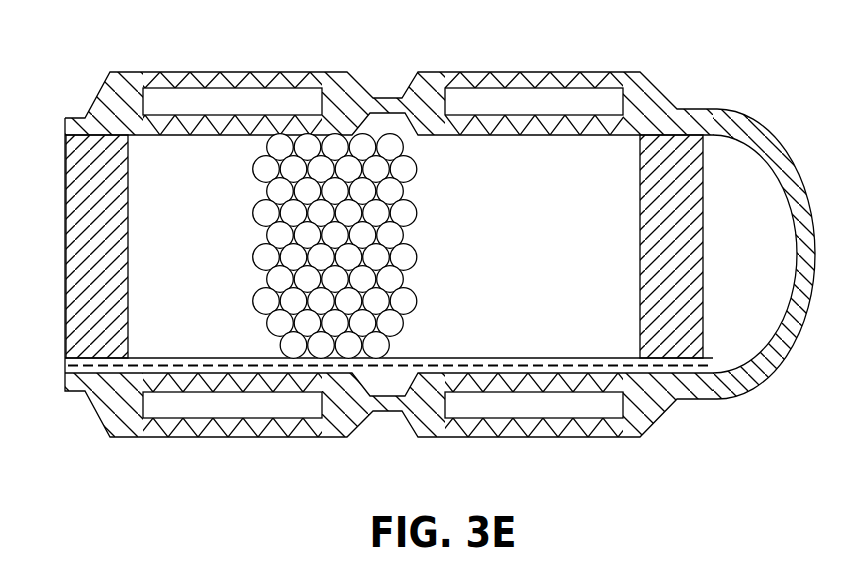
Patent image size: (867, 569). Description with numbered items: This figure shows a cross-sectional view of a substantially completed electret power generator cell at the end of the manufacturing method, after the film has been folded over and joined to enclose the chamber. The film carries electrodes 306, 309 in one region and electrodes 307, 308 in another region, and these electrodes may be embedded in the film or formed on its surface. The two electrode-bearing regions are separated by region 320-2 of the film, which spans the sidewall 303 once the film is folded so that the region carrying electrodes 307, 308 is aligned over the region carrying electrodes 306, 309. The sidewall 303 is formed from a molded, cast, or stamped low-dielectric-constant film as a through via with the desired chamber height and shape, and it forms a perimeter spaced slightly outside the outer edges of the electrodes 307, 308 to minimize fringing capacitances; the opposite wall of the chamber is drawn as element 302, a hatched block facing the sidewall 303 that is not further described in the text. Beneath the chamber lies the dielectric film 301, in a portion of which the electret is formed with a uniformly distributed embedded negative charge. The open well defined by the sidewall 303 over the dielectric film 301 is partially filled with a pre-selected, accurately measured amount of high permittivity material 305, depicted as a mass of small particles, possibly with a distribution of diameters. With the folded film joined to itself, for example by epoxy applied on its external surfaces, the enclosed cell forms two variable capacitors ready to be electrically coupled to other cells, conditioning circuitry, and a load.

The dielectric film 301 is at (518, 357).
The right end wall 302 is at (632, 132).
The sidewall 303 is at (155, 209).
The high permittivity material 305 is at (407, 256).
The electrode 306 is at (228, 408).
The electrode 307 is at (233, 100).
The electrode 308 is at (520, 100).
The electrode 309 is at (520, 408).
The film region 320-2 is at (786, 358).